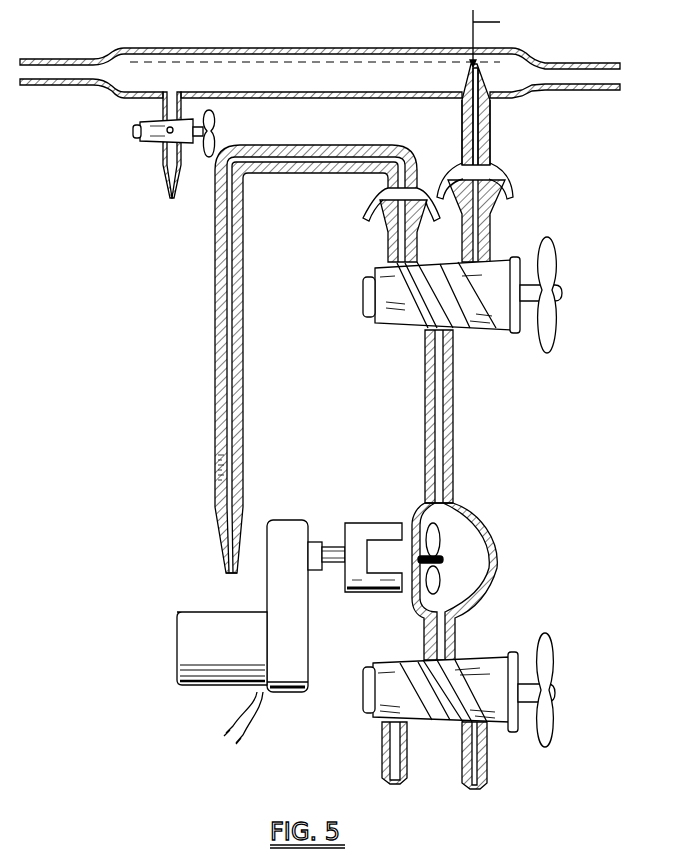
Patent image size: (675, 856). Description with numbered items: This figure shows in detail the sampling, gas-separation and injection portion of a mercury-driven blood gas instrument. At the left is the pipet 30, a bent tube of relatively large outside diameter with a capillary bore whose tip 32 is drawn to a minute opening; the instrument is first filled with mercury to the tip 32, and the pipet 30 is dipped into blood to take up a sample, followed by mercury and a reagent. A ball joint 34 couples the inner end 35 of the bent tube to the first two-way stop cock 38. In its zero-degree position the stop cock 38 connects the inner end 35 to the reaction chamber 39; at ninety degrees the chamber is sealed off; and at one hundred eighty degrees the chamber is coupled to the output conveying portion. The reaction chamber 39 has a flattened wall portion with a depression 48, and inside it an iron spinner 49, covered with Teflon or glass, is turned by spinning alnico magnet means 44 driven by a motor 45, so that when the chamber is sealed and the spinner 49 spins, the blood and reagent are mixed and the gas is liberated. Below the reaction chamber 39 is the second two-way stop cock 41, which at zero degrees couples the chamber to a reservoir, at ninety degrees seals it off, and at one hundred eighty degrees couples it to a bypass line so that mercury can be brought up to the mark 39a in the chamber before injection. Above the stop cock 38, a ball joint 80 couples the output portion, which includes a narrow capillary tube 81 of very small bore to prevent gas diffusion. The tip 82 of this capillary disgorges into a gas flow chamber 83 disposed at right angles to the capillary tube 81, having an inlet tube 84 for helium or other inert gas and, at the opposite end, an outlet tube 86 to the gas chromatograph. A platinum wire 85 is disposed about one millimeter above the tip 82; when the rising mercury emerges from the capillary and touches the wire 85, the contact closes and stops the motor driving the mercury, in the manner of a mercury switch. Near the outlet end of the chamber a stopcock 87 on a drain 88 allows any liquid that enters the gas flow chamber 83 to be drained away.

The pipet 30 is at (215, 422).
The tip of pipet 32 is at (231, 574).
The ball joint 34 is at (379, 228).
The inner end of bent tube 35 is at (383, 187).
The first two-way stop cock 38 is at (413, 330).
The reaction chamber 39 is at (480, 527).
The 0.12 mark 39a is at (425, 458).
The second two-way stop cock 41 is at (491, 658).
The alnico magnet means 44 is at (373, 527).
The motor 45 is at (197, 688).
The depression 48 is at (418, 560).
The iron spinner 49 is at (436, 586).
The ball joint 80 is at (495, 208).
The narrow capillary tube 81 is at (461, 114).
The tip of capillary tube 82 is at (467, 82).
The gas flow chamber 83 is at (402, 44).
The inlet tube 84 is at (612, 63).
The platinum wire 85 is at (500, 38).
The outlet tube 86 is at (85, 60).
The stopcock 87 is at (148, 141).
The drain 88 is at (171, 200).